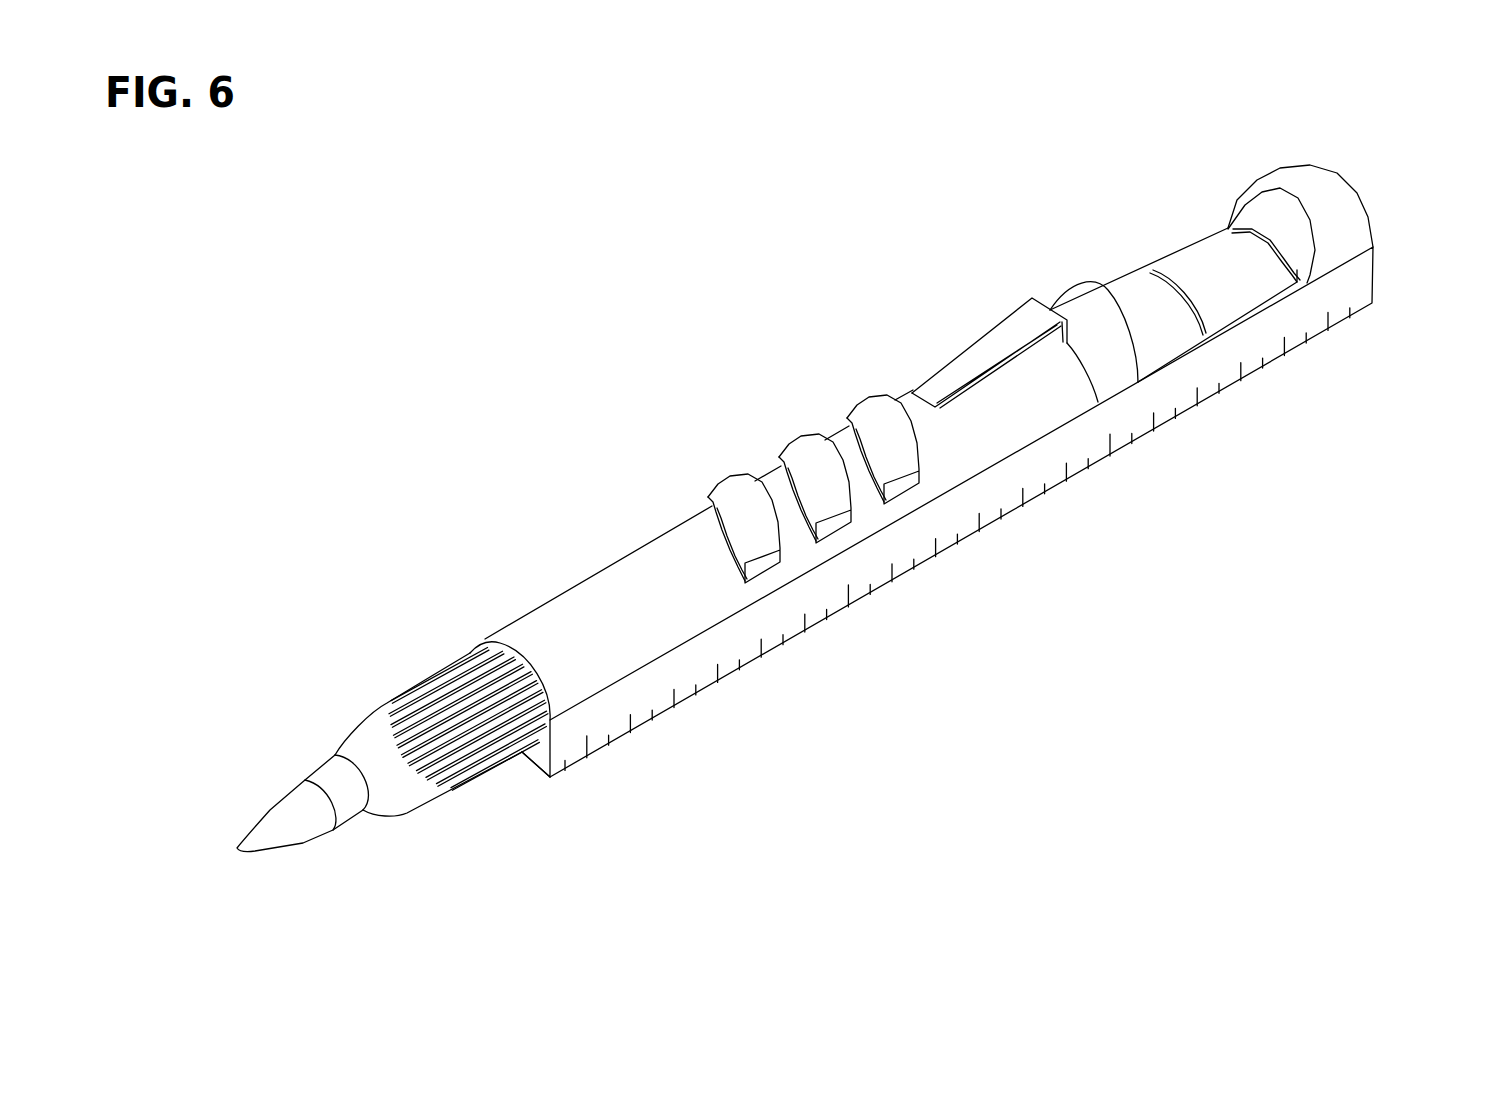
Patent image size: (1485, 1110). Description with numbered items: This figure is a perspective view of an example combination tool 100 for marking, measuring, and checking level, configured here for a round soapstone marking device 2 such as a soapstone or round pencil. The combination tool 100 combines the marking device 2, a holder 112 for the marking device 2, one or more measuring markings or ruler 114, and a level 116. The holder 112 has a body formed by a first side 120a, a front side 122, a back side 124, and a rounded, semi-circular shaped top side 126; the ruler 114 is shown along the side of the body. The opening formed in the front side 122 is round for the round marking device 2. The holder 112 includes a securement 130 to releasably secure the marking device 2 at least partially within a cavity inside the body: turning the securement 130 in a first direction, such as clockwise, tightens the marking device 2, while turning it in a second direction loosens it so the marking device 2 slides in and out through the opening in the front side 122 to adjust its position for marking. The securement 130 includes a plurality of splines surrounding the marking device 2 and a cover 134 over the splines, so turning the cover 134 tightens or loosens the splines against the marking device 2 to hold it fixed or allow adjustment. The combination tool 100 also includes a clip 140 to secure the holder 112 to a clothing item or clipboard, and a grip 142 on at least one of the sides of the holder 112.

The combination tool 100 is at (530, 352).
The marking device 2 is at (297, 780).
The holder 112 is at (536, 600).
The measuring markings or ruler 114 is at (1026, 494).
The level 116 is at (1187, 248).
The first side 120a is at (1256, 384).
The front side 122 is at (529, 763).
The back side 124 is at (1374, 246).
The rounded top side 126 is at (634, 548).
The securement 130 is at (362, 716).
The cover 134 is at (433, 676).
The clip 140 is at (967, 347).
The grip 142 is at (743, 476).